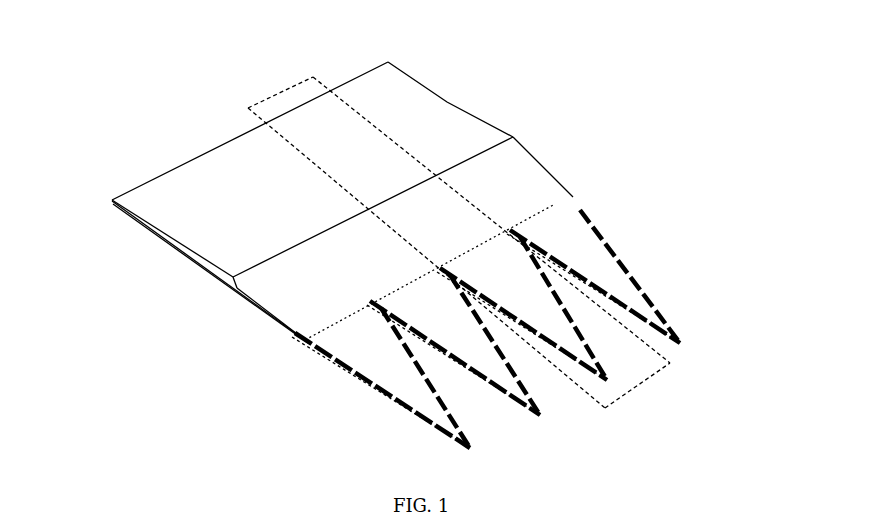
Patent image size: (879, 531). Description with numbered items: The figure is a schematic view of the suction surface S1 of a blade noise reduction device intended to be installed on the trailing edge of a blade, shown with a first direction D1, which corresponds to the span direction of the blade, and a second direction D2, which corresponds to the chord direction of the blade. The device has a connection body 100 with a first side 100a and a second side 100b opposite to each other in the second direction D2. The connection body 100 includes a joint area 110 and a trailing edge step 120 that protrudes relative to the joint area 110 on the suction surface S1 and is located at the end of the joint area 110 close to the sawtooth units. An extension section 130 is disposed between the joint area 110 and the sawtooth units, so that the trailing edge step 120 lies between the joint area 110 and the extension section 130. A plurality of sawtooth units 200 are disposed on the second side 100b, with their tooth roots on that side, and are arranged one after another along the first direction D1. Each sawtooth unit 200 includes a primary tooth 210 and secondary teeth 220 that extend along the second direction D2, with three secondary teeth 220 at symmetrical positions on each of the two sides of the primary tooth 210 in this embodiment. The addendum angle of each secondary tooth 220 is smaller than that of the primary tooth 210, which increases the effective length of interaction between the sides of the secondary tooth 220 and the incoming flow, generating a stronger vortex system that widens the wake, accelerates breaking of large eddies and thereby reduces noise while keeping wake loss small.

The connection body 100 is at (379, 219).
The first side 100a is at (188, 163).
The second side 100b is at (555, 204).
The joint area 110 is at (413, 97).
The trailing edge step 120 is at (235, 284).
The extension section 130 is at (537, 182).
The suction surface S1 is at (515, 172).
The sawtooth unit 200 is at (529, 335).
The primary tooth 210 is at (593, 375).
The secondary tooth 220 is at (555, 347).
The first direction D1 is at (265, 7).
The second direction D2 is at (130, 363).